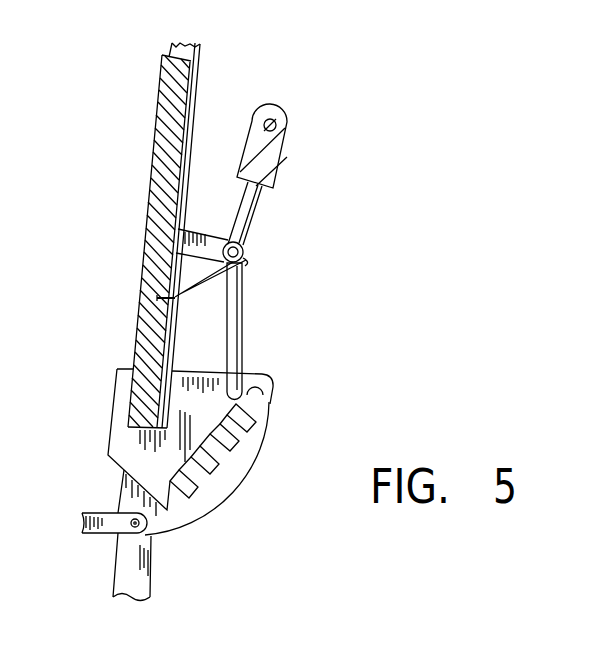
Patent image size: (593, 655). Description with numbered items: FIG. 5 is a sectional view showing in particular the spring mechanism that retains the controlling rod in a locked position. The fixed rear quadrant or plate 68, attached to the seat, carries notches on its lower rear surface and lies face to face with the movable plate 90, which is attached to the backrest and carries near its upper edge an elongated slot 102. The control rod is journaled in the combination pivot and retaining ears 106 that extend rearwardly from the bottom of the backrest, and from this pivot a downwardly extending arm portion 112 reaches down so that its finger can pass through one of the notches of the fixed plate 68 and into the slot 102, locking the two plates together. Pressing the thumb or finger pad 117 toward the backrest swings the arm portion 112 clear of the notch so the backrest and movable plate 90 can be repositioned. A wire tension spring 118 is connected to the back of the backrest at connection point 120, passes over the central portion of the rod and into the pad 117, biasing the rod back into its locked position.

The combination pivot and retaining ears 106 is at (200, 231).
The thumb or finger pad 117 is at (270, 153).
The connection point 120 is at (162, 298).
The tension spring 118 is at (183, 287).
The arm portion 112 is at (237, 338).
The elongated slot 102 is at (252, 376).
The rear quadrant or plate 68 is at (183, 439).
The movable plate 90 is at (195, 502).